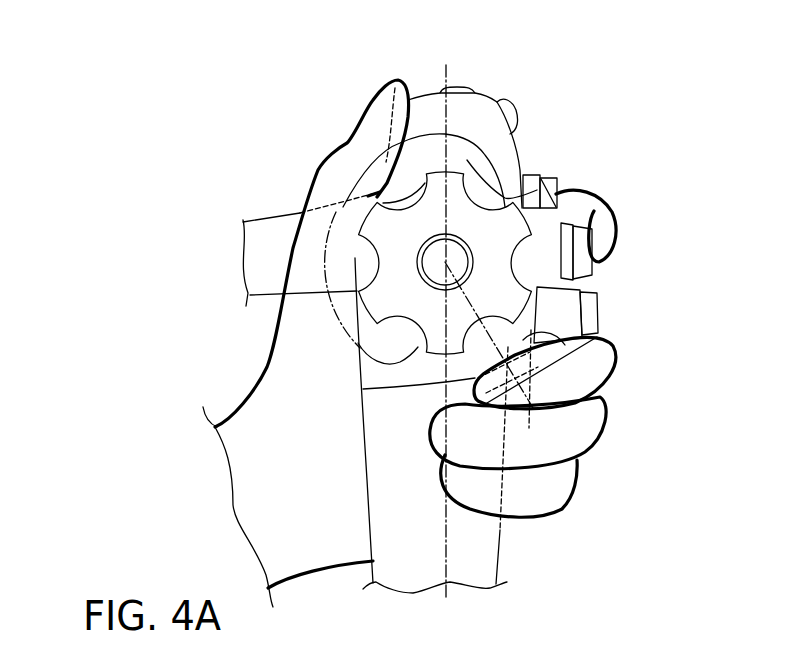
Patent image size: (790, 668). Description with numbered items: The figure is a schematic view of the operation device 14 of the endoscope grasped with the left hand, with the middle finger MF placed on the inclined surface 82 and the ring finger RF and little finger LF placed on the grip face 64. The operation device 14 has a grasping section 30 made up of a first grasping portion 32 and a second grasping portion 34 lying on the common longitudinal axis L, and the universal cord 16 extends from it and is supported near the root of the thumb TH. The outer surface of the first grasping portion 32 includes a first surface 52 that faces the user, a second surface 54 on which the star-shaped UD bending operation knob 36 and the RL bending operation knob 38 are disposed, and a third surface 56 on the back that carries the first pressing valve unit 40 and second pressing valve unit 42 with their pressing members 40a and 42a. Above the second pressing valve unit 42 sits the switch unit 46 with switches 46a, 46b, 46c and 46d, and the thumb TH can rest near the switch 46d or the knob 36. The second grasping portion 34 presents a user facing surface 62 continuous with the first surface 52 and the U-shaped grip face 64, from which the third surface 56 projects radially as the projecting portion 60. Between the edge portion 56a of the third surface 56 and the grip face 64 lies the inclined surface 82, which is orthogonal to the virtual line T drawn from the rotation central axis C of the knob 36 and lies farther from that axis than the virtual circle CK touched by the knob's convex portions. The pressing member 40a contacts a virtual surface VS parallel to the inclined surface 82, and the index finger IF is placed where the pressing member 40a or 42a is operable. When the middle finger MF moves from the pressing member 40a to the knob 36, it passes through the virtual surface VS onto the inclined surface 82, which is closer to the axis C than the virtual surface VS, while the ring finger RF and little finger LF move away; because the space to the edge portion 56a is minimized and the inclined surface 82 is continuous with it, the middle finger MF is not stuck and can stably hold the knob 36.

The operation device 14 is at (592, 526).
The universal cord 16 is at (262, 220).
The grasping section 30 is at (348, 391).
The first grasping portion 32 is at (343, 320).
The second grasping portion 34 is at (493, 566).
The UD bending operation knob 36 is at (338, 207).
The RL bending operation knob 38 is at (383, 210).
The first pressing valve unit 40 is at (618, 325).
The pressing member 40a is at (615, 316).
The second pressing valve unit 42 is at (606, 278).
The pressing member 42a is at (603, 272).
The switch unit 46 is at (494, 80).
The switch 46a is at (559, 183).
The switch 46b is at (518, 107).
The switch 46c is at (458, 86).
The switch 46d is at (396, 80).
The first surface 52 is at (357, 365).
The second surface 54 is at (382, 380).
The third surface 56 is at (522, 157).
The edge portion 56a is at (527, 377).
The projecting portion 60 is at (567, 353).
The user facing surface 62 is at (366, 517).
The grip face 64 is at (492, 537).
The inclined surface 82 is at (532, 392).
The thumb TH is at (378, 96).
The index finger IF is at (618, 220).
The middle finger MF is at (620, 373).
The ring finger RF is at (603, 410).
The little finger LF is at (580, 480).
The virtual circle CK is at (322, 258).
The virtual surface VS is at (627, 333).
The virtual line T is at (470, 293).
The rotation central axis C is at (445, 262).
The longitudinal axis L is at (443, 557).